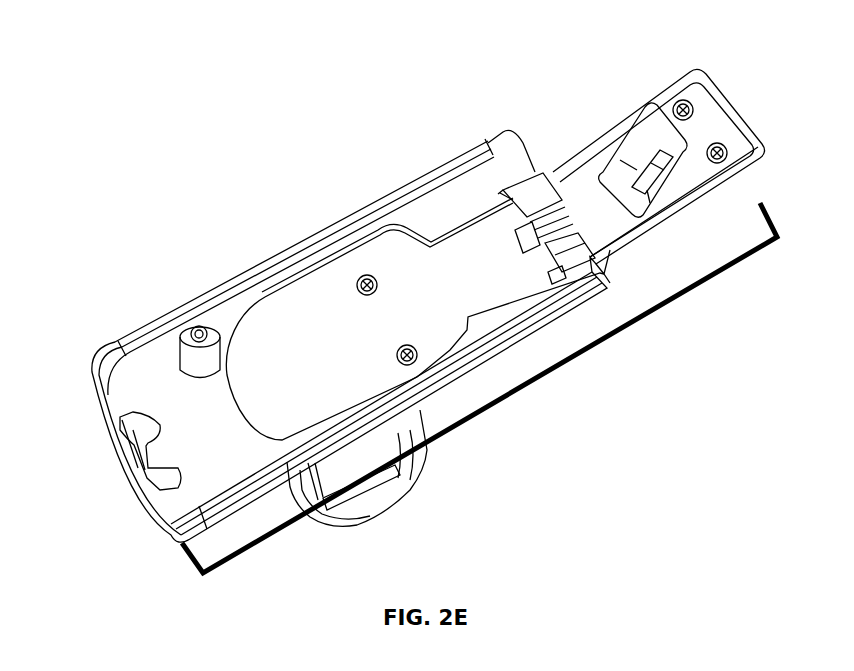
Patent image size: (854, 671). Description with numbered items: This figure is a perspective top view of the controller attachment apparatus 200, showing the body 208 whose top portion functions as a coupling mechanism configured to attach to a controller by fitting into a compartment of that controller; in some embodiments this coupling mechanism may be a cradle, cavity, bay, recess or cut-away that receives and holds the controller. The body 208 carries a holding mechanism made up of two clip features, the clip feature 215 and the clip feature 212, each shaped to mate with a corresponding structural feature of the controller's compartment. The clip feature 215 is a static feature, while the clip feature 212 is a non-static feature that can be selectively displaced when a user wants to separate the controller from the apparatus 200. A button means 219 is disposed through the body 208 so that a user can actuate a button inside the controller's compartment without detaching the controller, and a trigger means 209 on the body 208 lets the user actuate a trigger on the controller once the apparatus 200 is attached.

The apparatus 200 is at (436, 68).
The body 208 is at (493, 405).
The trigger means 209 is at (643, 165).
The clip feature 212 is at (528, 188).
The clip feature 215 is at (130, 453).
The button means 219 is at (200, 330).